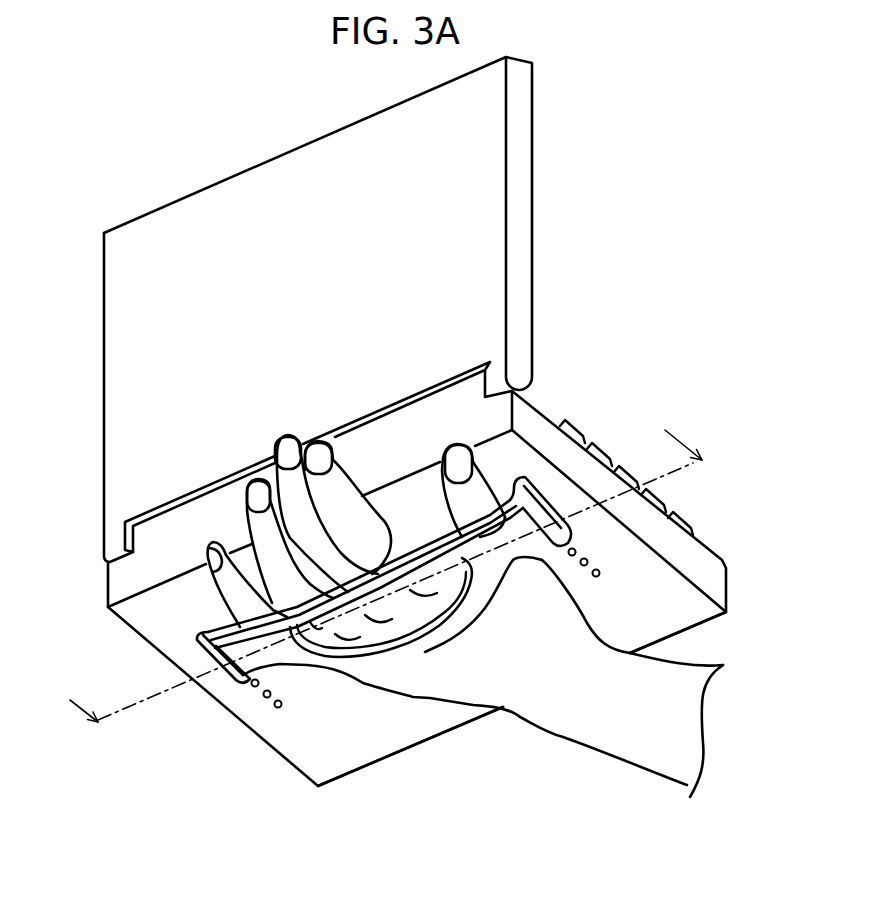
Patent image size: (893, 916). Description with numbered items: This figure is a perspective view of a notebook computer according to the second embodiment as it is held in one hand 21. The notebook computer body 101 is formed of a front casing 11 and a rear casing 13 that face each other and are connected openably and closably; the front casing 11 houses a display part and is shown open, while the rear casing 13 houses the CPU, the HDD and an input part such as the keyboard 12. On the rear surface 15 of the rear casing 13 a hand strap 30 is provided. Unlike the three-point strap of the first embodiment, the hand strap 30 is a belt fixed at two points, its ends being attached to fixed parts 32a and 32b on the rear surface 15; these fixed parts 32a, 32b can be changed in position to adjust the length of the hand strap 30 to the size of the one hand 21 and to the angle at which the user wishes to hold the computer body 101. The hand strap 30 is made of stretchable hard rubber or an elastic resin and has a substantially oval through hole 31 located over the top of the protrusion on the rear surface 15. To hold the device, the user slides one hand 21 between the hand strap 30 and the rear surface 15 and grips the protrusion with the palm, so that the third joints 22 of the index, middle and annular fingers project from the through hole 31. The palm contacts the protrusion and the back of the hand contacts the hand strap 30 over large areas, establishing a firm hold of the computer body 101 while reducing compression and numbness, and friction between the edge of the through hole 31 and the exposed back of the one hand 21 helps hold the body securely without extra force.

The notebook computer body 101 is at (561, 238).
The front casing 11 is at (517, 108).
The keyboard 12 is at (680, 516).
The rear casing 13 is at (700, 565).
The rear surface 15 is at (657, 607).
The one hand 21 is at (495, 660).
The third joints 22 is at (377, 622).
The hand strap 30 is at (273, 648).
The through hole 31 is at (412, 618).
The fixed part 32a is at (198, 630).
The fixed part 32b is at (525, 478).